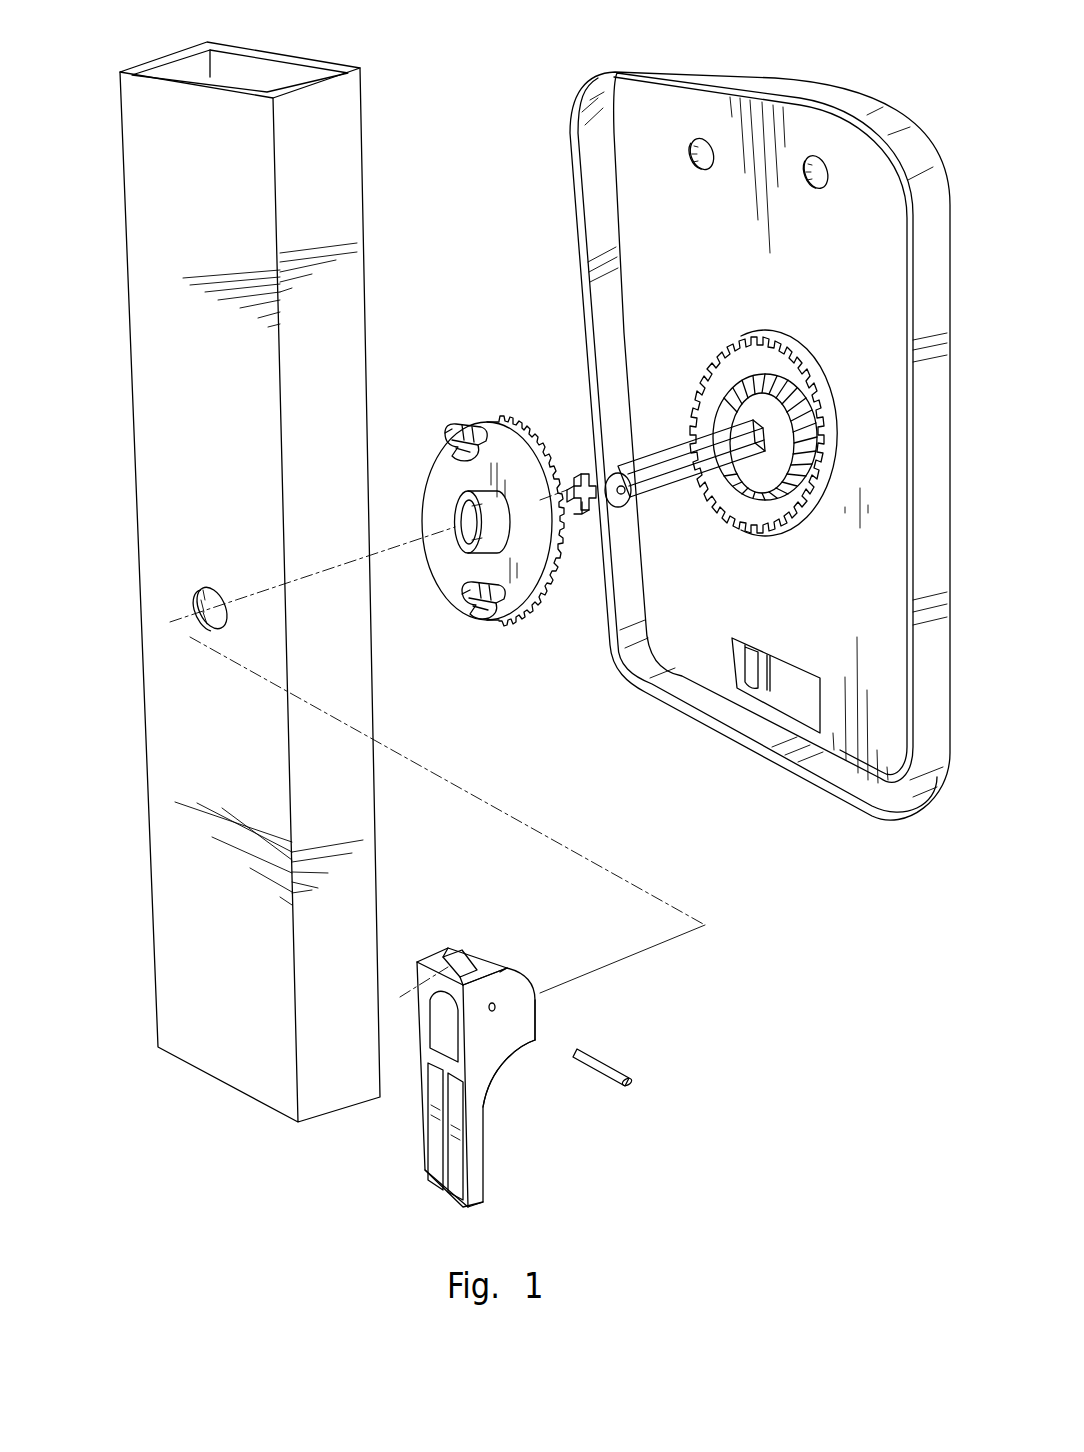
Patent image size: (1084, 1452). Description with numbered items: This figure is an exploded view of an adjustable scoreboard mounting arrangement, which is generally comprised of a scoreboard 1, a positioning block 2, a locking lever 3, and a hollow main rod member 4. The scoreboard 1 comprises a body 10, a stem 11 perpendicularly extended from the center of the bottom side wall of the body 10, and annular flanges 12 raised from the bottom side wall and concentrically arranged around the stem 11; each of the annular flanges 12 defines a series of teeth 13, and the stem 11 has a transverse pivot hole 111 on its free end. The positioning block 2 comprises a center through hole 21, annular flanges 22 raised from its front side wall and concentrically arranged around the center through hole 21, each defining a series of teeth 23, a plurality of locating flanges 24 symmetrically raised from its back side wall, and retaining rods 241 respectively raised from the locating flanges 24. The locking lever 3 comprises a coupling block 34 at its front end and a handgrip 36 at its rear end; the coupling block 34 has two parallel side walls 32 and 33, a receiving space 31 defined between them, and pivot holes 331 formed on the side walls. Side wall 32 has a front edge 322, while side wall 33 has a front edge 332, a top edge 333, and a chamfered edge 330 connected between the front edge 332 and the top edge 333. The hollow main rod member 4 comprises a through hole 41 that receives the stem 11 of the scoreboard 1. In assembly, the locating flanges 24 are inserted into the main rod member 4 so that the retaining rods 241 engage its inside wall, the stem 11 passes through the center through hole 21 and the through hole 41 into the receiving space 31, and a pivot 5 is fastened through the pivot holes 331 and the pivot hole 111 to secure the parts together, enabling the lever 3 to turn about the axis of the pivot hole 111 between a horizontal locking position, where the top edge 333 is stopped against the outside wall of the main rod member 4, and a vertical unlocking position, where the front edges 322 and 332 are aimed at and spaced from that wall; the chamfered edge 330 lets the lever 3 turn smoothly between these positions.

The scoreboard 1 is at (723, 410).
The body 10 is at (575, 200).
The stem 11 is at (666, 482).
The transverse pivot hole 111 is at (623, 500).
The annular flanges 12 is at (724, 340).
The teeth 13 is at (788, 353).
The positioning block 2 is at (435, 510).
The center through hole 21 is at (466, 513).
The annular flanges 22 is at (522, 440).
The teeth 23 is at (523, 437).
The locating flanges 24 is at (480, 430).
The retaining rods 241 is at (447, 430).
The locking lever 3 is at (518, 1040).
The receiving space 31 is at (478, 962).
The parallel side wall 32 is at (458, 960).
The front edge 322 is at (447, 957).
The parallel side wall 33 is at (522, 1035).
The chamfered edge 330 is at (533, 983).
The pivot hole 331 is at (497, 1005).
The front edge 332 is at (500, 972).
The top edge 333 is at (535, 1022).
The coupling block 34 is at (428, 983).
The handgrip 36 is at (473, 1160).
The hollow main rod member 4 is at (375, 261).
The through hole 41 is at (200, 590).
The pivot 5 is at (611, 1095).